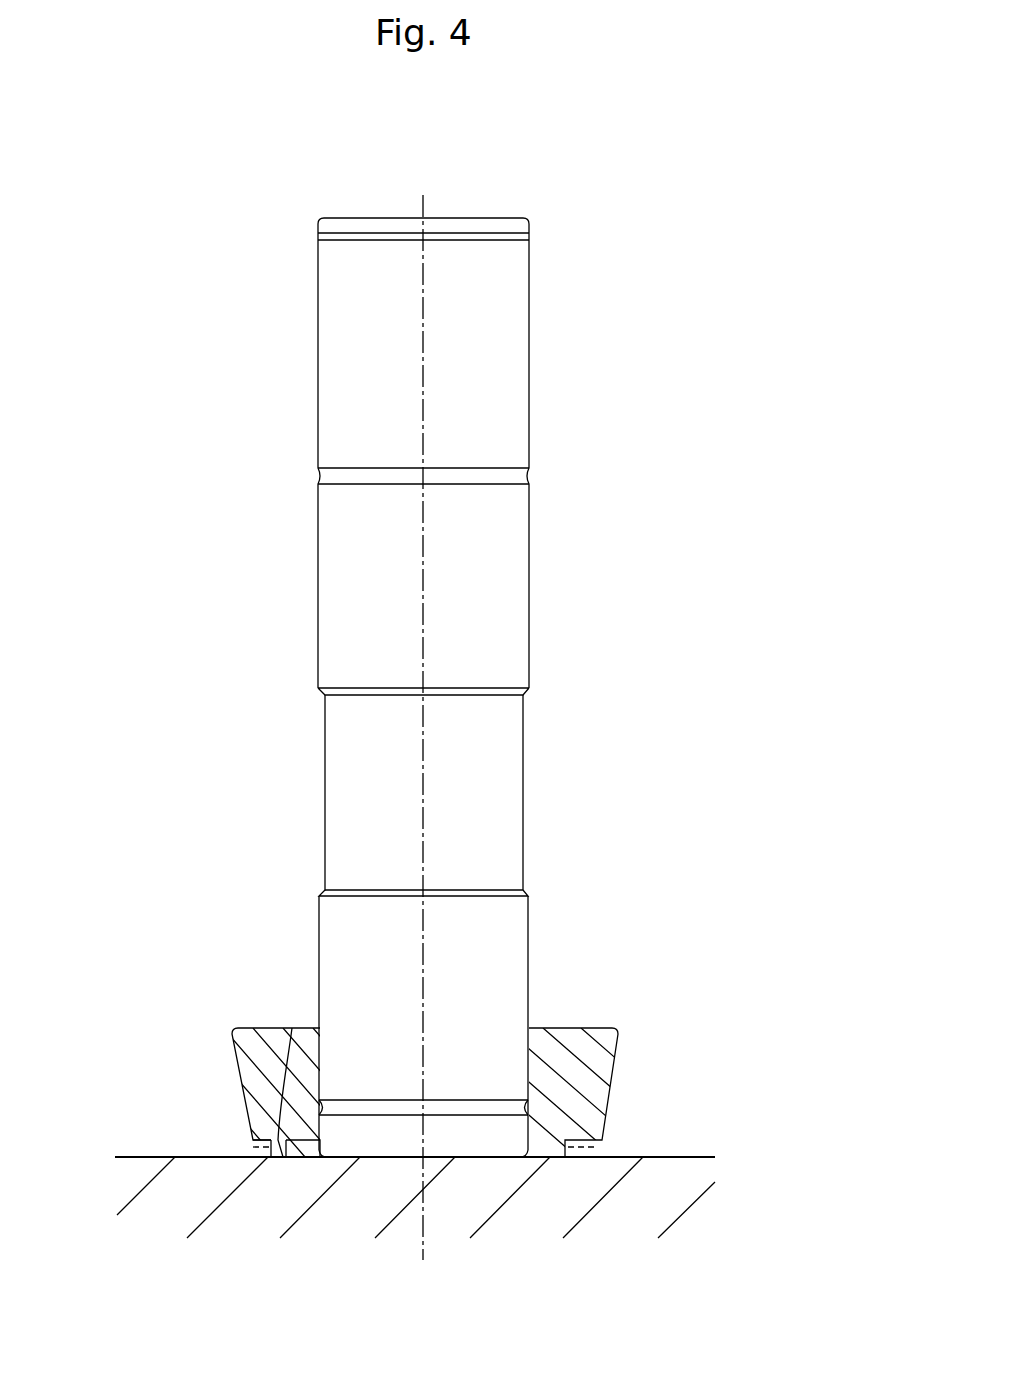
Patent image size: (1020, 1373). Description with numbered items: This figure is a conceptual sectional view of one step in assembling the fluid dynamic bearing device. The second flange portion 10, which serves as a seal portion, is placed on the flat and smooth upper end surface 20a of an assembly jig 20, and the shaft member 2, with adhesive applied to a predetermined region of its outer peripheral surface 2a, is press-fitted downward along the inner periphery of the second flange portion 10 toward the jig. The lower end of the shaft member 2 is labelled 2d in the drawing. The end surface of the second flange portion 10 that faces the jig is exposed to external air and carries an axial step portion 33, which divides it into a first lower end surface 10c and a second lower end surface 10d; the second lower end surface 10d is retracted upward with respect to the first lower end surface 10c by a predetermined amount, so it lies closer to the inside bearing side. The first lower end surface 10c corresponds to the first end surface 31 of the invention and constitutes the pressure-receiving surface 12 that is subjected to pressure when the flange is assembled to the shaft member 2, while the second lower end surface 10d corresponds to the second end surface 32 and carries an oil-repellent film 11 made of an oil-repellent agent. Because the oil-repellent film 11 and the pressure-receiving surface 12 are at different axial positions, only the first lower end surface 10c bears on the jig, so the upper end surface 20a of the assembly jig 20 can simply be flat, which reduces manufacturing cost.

The shaft member 2 is at (469, 736).
The outer peripheral surface 2a is at (469, 1100).
The shaft end face 2d is at (500, 1157).
The second flange portion 10 is at (448, 1160).
The first lower end surface 10c is at (349, 1222).
The pressure-receiving surface 12 is at (290, 1160).
The second lower end surface 10d is at (200, 1222).
The second end surface 32 is at (267, 1160).
The first end surface 31 is at (290, 1160).
The step portion 33 is at (292, 1028).
The oil-repellent film 11 is at (585, 1157).
The assembly jig 20 is at (451, 1173).
The upper end surface 20a is at (675, 1157).